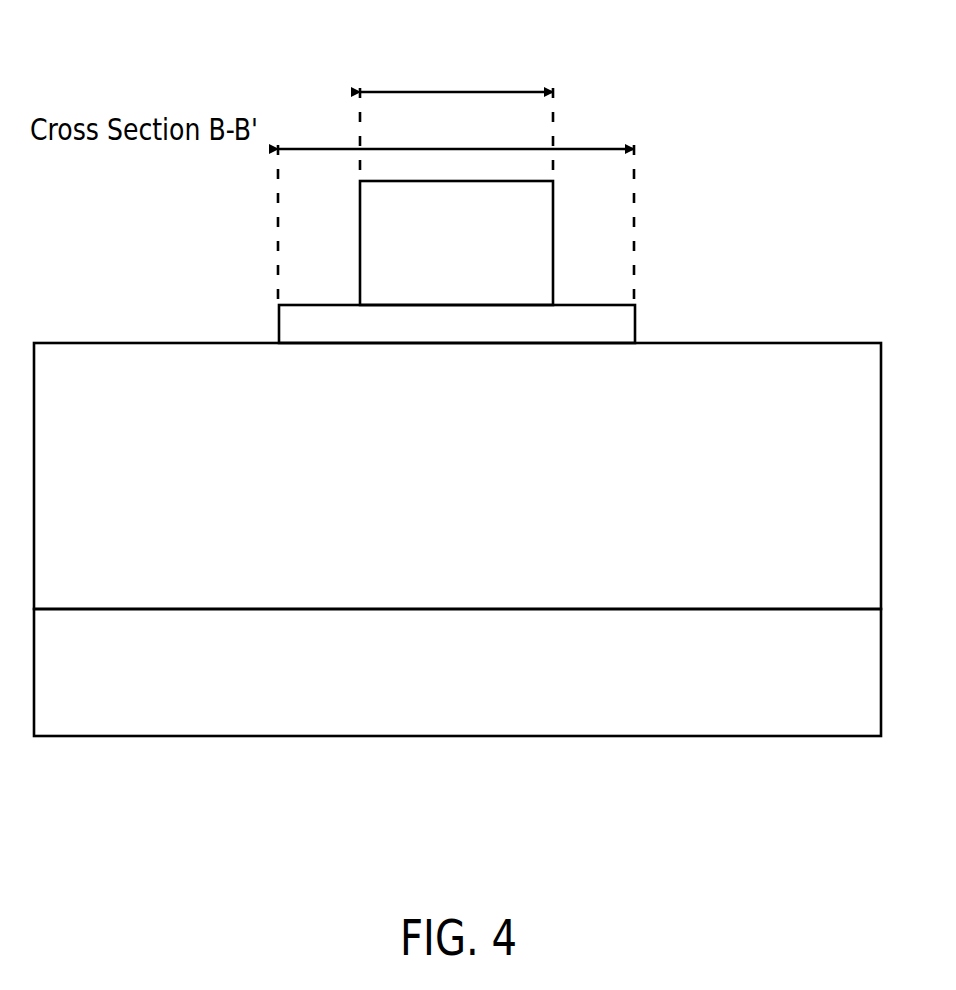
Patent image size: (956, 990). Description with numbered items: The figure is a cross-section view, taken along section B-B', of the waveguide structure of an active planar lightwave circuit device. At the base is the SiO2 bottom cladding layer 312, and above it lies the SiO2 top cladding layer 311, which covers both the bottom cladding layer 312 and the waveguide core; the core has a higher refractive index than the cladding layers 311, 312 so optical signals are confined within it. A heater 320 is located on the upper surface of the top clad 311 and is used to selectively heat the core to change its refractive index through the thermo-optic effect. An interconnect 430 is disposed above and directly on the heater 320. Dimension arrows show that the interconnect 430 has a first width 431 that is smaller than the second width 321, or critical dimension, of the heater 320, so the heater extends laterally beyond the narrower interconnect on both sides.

The first width 431 is at (505, 90).
The second width 321 is at (591, 148).
The interconnect 430 is at (456, 243).
The heater 320 is at (457, 325).
The top cladding layer 311 is at (457, 476).
The bottom cladding layer 312 is at (457, 672).